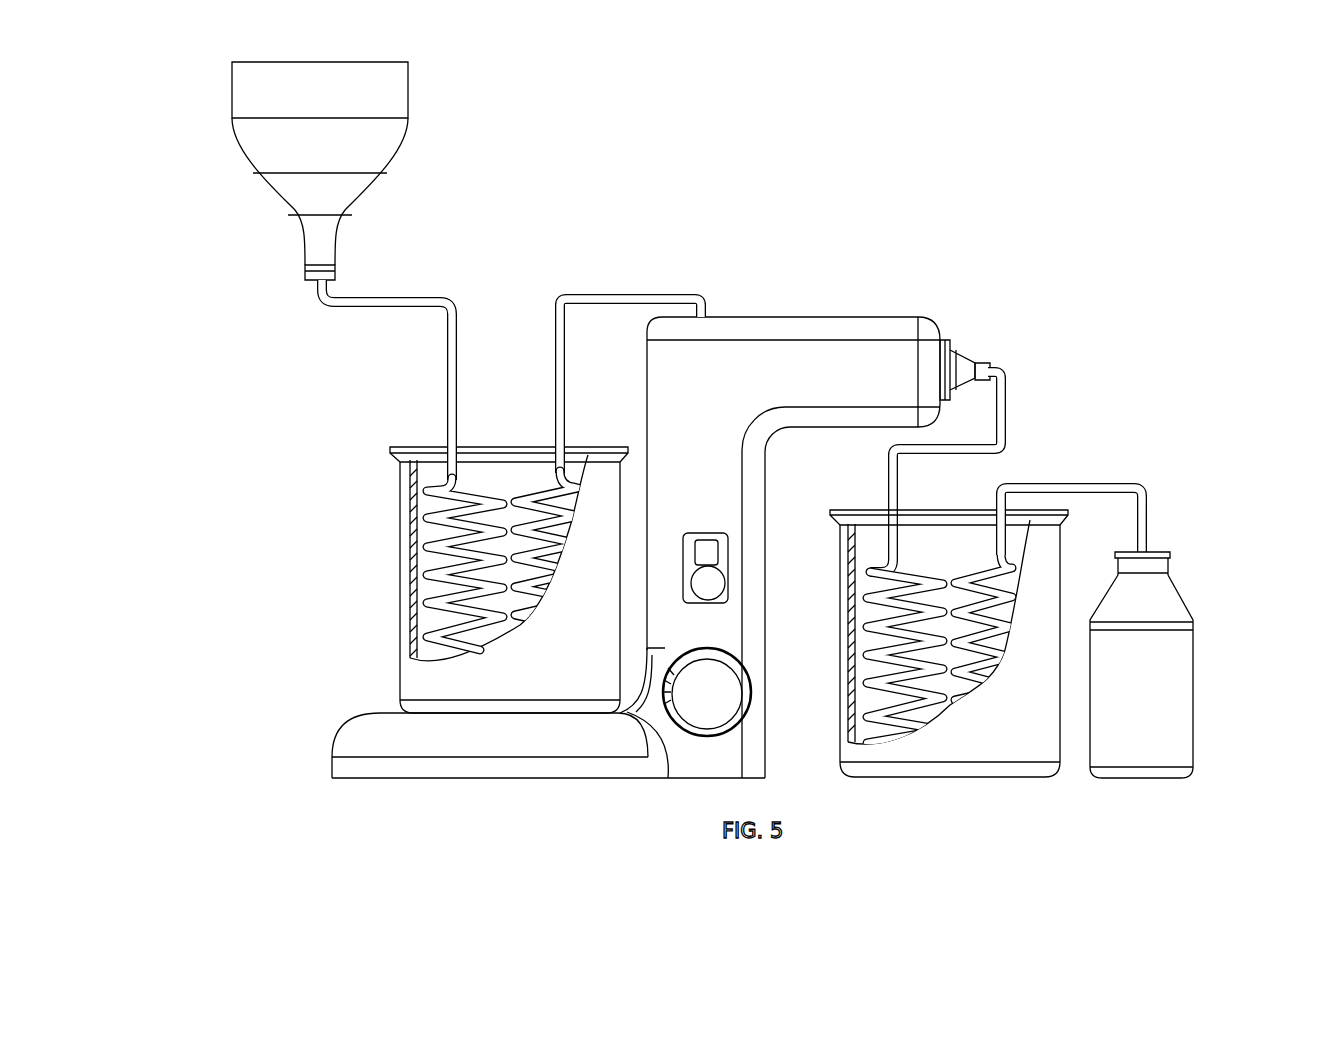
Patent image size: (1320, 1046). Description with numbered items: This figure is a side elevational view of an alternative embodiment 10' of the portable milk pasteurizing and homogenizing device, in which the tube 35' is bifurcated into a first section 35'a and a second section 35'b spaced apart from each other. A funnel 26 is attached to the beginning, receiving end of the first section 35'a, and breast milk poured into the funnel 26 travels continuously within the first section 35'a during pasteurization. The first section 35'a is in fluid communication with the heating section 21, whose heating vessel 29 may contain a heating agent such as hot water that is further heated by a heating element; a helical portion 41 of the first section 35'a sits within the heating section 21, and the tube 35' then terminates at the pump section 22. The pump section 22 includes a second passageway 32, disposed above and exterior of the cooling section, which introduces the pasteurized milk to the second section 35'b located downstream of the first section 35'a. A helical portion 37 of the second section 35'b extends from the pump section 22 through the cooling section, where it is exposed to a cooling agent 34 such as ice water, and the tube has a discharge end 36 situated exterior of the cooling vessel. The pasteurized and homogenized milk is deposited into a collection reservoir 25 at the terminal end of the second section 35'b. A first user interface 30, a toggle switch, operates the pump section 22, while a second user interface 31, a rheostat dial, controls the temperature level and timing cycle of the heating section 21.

The alternative embodiment 10' is at (702, 456).
The heating section 21 is at (308, 693).
The pump section 22 is at (774, 282).
The collection reservoir 25 is at (1178, 680).
The funnel 26 is at (255, 82).
The heating vessel 29 is at (422, 682).
The first user interface 30 is at (697, 587).
The second user interface 31 is at (703, 705).
The second passageway 32 is at (995, 367).
The cooling agent 34 is at (873, 590).
The tube 35' is at (721, 386).
The first section 35'a is at (425, 380).
The second section 35'b is at (1088, 490).
The discharge end 36 is at (1140, 522).
The helical portion 37 is at (968, 660).
The helical portion 41 is at (440, 545).